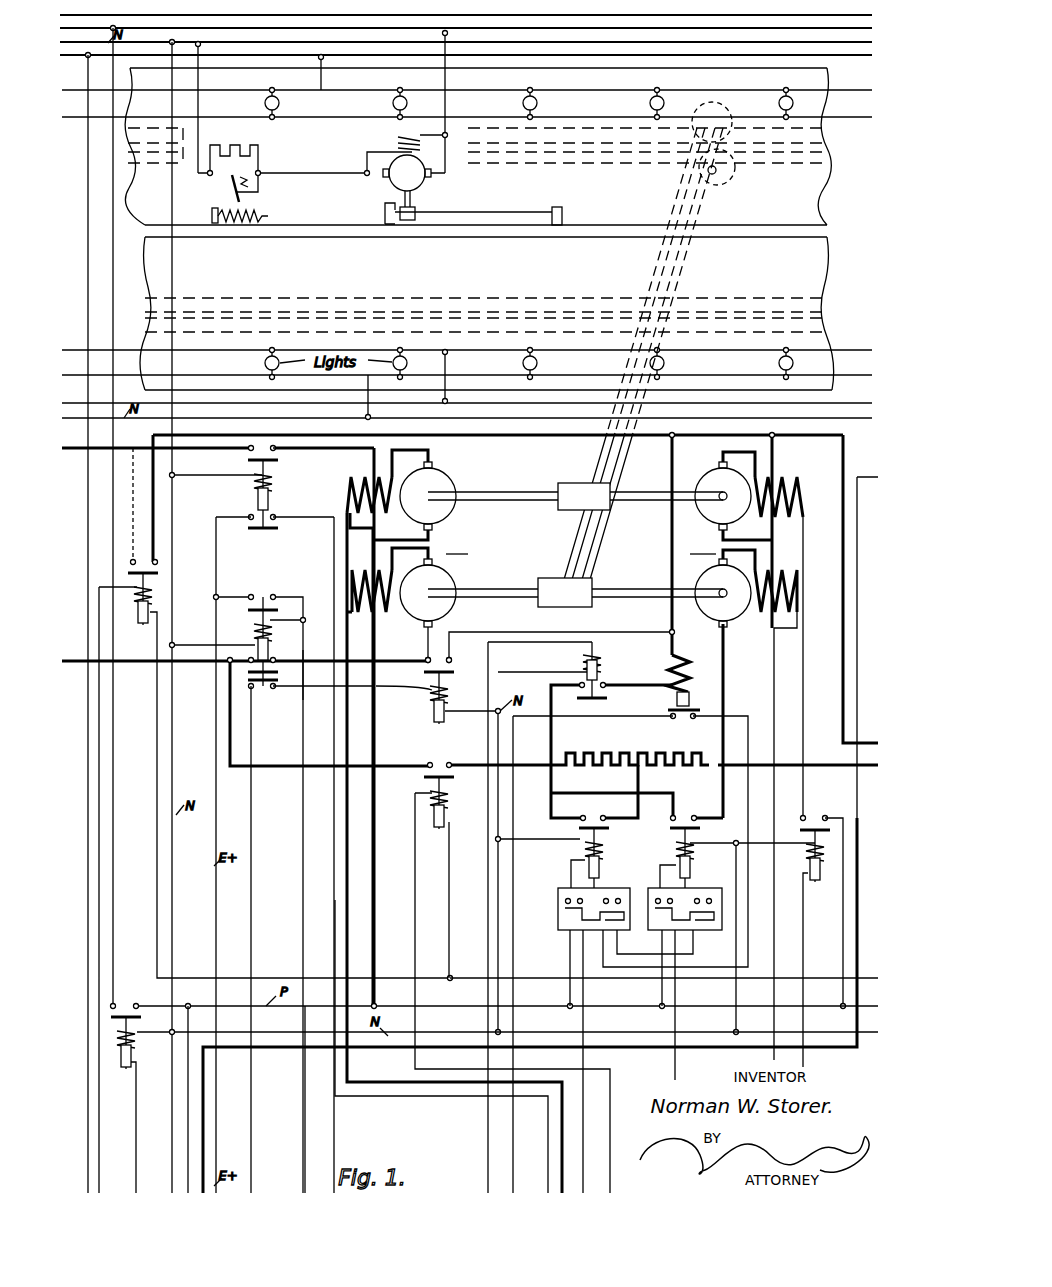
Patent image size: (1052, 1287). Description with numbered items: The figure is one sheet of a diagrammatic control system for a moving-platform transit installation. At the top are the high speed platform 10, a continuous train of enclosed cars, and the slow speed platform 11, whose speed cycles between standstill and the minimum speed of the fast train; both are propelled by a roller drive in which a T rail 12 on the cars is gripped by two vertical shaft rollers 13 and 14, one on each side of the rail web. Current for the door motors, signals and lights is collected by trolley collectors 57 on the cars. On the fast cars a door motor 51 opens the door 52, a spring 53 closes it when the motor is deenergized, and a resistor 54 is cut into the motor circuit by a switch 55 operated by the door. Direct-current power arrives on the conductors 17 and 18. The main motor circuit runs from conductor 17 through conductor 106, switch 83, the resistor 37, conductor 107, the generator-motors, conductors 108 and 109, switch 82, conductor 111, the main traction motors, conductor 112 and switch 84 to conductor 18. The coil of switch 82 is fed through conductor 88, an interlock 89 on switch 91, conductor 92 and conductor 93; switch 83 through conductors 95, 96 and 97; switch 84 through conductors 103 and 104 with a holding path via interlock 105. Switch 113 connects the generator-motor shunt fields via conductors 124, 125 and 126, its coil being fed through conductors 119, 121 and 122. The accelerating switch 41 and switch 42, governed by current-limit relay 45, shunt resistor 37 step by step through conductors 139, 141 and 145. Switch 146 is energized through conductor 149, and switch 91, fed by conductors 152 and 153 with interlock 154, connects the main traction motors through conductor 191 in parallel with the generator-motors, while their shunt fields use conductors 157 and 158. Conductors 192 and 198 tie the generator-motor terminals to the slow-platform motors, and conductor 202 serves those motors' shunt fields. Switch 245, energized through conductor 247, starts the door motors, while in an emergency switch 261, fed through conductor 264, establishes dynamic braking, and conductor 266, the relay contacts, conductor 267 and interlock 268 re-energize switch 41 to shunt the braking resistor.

The high speed platform 10 is at (843, 199).
The slow speed platform 11 is at (843, 279).
The T rail 12 is at (638, 150).
The vertical shaft roller 13 is at (730, 112).
The vertical shaft roller 14 is at (733, 181).
The power conductor 17 is at (70, 648).
The power conductor 18 is at (85, 452).
The resistor 37 is at (622, 758).
The accelerating switch 41 is at (546, 873).
The electrically-operated switch 42 is at (704, 873).
The current-limit relay 45 is at (660, 684).
The door motor 51 is at (426, 186).
The door 52 is at (490, 212).
The spring 53 is at (268, 216).
The resistor 54 is at (262, 150).
The switch 55 is at (230, 182).
The trolley collector 57 is at (203, 46).
The switch 82 is at (460, 693).
The switch 83 is at (460, 811).
The switch 84 is at (228, 503).
The conductor 88 is at (256, 731).
The interlock 89 is at (262, 690).
The switch 91 is at (277, 648).
The conductor 92 is at (326, 680).
The conductor 93 is at (476, 712).
The conductor 95 is at (410, 905).
The conductor 96 is at (422, 913).
The conductor 97 is at (156, 806).
The conductor 103 is at (333, 552).
The conductor 104 is at (216, 478).
The interlock 105 is at (270, 534).
The conductor 106 is at (294, 768).
The conductor 107 is at (726, 672).
The conductor 108 is at (706, 437).
The conductor 109 is at (670, 548).
The conductor 111 is at (424, 643).
The conductor 112 is at (326, 453).
The switch 113 is at (806, 863).
The conductor 119 is at (804, 948).
The conductor 121 is at (762, 846).
The conductor 122 is at (736, 947).
The conductor 124 is at (832, 926).
The conductor 125 is at (806, 695).
The conductor 126 is at (774, 740).
The conductor 139 is at (586, 1172).
The conductor 141 is at (552, 843).
The conductor 145 is at (680, 1025).
The switch 146 is at (126, 646).
The conductor 149 is at (100, 1154).
The conductor 152 is at (306, 1152).
The conductor 153 is at (182, 640).
The interlock 154 is at (263, 610).
The conductor 157 is at (374, 872).
The conductor 158 is at (350, 827).
The conductor 191 is at (328, 662).
The conductor 192 is at (812, 768).
The conductor 198 is at (850, 470).
The conductor 202 is at (246, 1048).
The electrically-operated switch 245 is at (170, 1078).
The conductor 247 is at (136, 1190).
The switch 261 is at (604, 650).
The conductor 264 is at (488, 1174).
The conductor 266 is at (516, 1152).
The conductor 267 is at (748, 722).
The interlock 268 is at (604, 878).